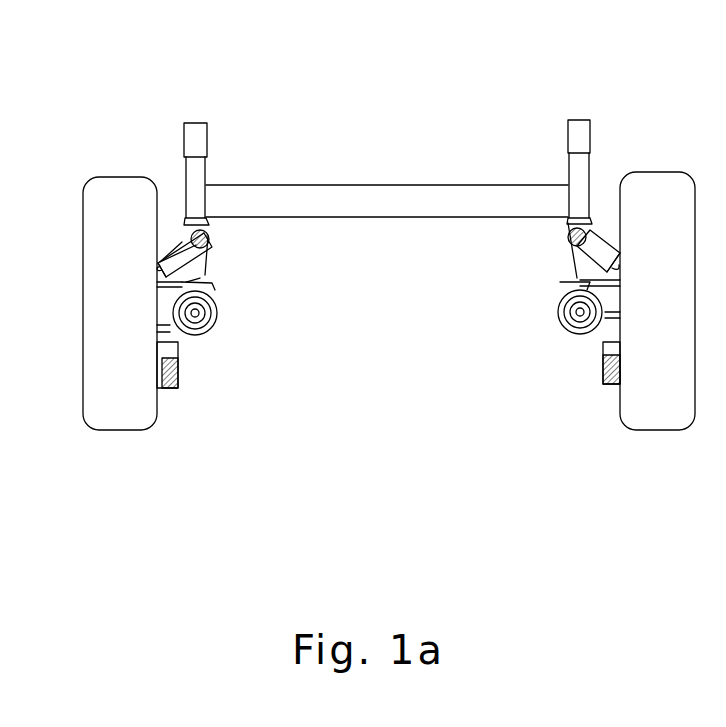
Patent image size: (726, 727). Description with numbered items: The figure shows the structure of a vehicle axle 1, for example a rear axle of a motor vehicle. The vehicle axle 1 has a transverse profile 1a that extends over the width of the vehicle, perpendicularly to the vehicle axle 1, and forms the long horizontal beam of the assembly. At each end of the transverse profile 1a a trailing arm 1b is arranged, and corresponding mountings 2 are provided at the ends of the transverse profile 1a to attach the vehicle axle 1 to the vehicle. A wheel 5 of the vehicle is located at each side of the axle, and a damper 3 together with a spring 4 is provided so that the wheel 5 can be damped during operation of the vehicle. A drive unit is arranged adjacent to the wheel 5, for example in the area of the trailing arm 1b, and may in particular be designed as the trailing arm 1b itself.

The vehicle axle 1 is at (364, 137).
The transverse profile 1a is at (283, 200).
The trailing arm 1b is at (195, 215).
The mounting 2 is at (193, 147).
The damper 3 is at (210, 243).
The spring 4 is at (213, 337).
The wheel 5 is at (117, 208).